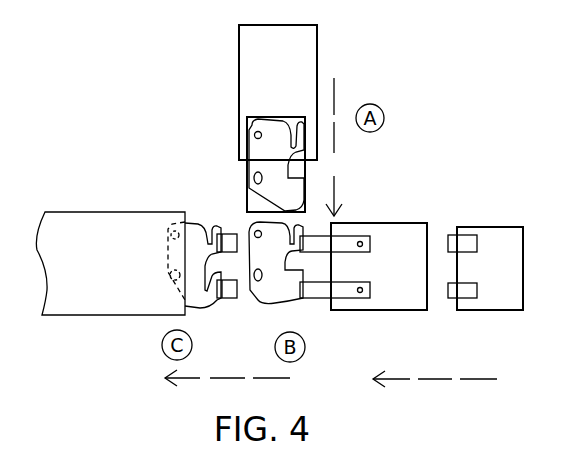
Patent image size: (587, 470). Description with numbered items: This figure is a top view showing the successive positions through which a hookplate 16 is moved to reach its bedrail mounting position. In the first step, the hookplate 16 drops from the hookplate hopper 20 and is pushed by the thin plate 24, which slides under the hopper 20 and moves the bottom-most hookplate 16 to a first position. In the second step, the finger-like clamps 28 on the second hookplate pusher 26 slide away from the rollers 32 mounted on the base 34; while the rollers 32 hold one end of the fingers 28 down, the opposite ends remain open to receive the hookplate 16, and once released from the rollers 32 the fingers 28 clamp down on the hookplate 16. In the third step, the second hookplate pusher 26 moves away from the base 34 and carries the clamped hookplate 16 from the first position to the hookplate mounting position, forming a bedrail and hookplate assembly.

The hookplate 16 is at (76, 306).
The hookplate hopper 20 is at (306, 163).
The thin plate 24 is at (264, 60).
The second hookplate pusher 26 is at (395, 279).
The finger-like clamps 28 is at (316, 293).
The rollers 32 is at (467, 290).
The base 34 is at (490, 279).